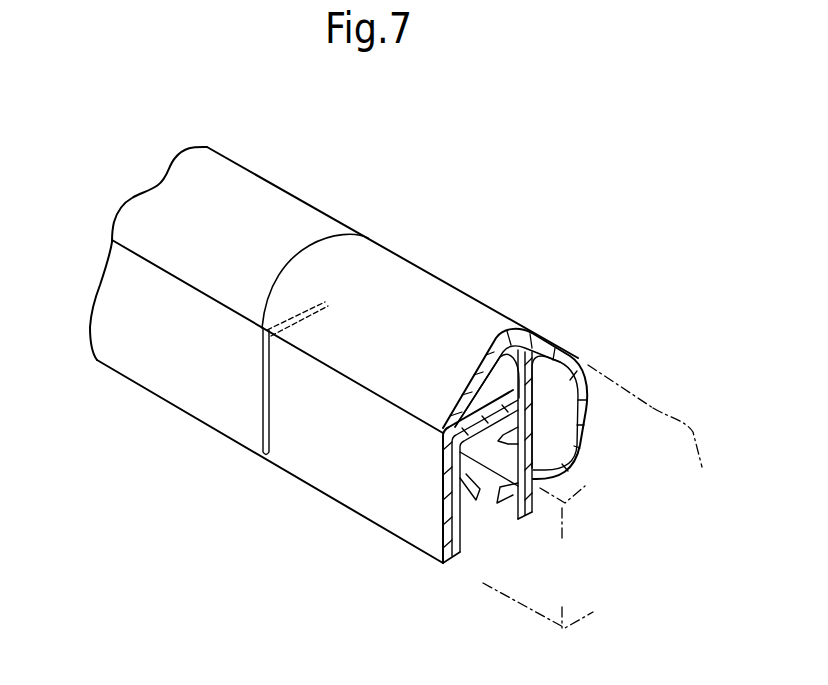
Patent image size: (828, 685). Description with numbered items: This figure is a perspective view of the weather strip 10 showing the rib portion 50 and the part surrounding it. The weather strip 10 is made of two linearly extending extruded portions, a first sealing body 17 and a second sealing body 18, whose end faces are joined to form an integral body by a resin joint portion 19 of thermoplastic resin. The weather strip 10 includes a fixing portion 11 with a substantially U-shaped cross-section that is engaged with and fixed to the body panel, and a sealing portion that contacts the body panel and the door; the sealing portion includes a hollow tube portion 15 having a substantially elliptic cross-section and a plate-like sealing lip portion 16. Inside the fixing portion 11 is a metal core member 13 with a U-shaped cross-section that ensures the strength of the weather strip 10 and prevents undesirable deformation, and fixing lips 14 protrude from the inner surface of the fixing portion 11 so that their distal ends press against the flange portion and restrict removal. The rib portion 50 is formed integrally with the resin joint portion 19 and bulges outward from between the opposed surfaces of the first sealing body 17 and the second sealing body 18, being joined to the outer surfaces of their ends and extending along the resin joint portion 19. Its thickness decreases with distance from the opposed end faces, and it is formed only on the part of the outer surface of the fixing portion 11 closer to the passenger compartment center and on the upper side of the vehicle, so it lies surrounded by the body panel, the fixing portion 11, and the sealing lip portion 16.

The weather strip 10 is at (455, 169).
The fixing portion 11 is at (405, 518).
The core member 13 is at (447, 490).
The fixing lips 14 is at (507, 503).
The hollow tube portion 15 is at (587, 398).
The sealing lip portion 16 is at (378, 378).
The first sealing body 17 is at (308, 161).
The second sealing body 18 is at (503, 275).
The resin joint portion 19 is at (315, 234).
The rib portion 50 is at (320, 327).